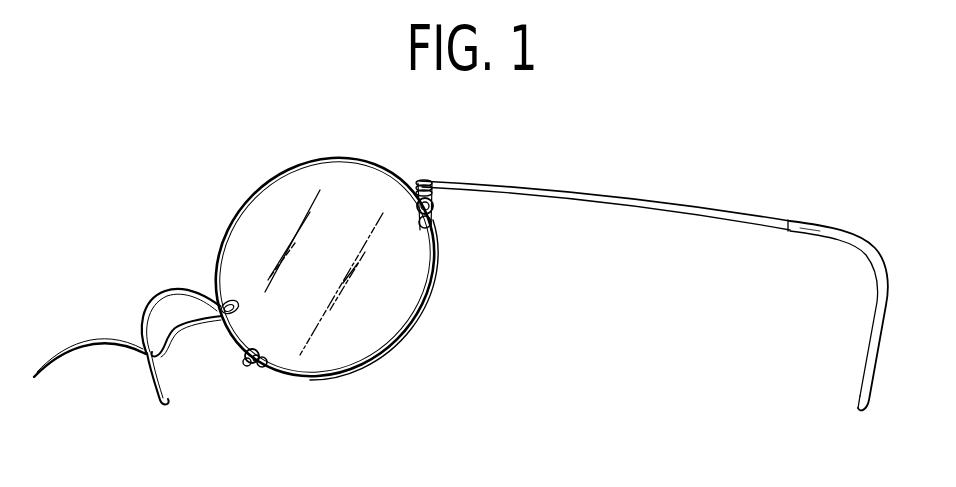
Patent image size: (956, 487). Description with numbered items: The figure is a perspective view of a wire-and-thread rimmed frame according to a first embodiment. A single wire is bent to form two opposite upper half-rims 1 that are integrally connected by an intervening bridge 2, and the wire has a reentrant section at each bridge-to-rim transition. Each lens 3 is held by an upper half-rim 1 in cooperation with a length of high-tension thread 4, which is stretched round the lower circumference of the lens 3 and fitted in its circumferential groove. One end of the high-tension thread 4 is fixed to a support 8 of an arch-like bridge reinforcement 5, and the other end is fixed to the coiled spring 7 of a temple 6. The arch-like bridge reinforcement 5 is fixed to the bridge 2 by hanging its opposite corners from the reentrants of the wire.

The upper half-rim 1 is at (280, 180).
The bridge 2 is at (163, 290).
The lens 3 is at (335, 332).
The high-tension thread 4 is at (402, 333).
The arch-like bridge reinforcement 5 is at (180, 327).
The temple 6 is at (595, 191).
The coiled spring 7 is at (436, 200).
The support 8 is at (234, 340).